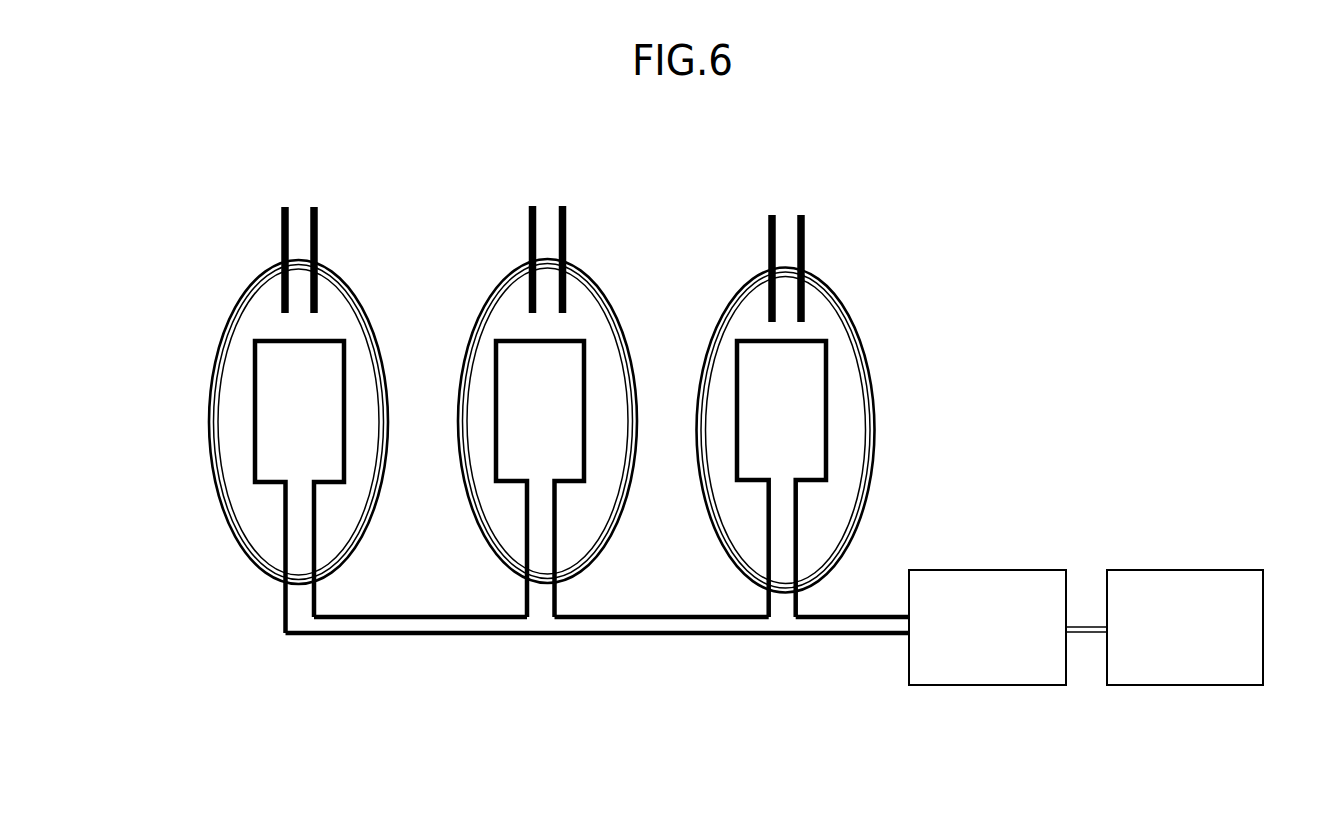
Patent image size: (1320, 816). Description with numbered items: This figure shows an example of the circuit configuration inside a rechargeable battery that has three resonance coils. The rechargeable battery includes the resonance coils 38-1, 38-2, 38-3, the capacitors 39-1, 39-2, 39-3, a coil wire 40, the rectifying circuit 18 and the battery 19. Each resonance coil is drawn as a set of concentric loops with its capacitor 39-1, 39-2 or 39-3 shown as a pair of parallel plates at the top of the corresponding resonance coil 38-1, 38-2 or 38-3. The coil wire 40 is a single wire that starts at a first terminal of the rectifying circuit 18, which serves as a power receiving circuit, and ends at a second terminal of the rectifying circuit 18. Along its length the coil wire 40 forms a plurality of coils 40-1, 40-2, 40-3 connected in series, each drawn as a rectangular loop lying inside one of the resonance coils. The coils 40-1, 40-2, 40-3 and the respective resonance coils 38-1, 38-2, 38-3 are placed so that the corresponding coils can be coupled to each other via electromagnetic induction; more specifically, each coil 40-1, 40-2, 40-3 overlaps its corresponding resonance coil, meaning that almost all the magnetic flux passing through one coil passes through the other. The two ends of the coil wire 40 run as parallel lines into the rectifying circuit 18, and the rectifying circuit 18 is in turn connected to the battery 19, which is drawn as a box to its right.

The resonance coil 38-1 is at (378, 337).
The resonance coil 38-2 is at (627, 337).
The resonance coil 38-3 is at (862, 338).
The capacitor 39-1 is at (318, 243).
The capacitor 39-2 is at (567, 243).
The capacitor 39-3 is at (805, 243).
The coil 40-1 is at (255, 458).
The coil 40-2 is at (496, 452).
The coil 40-3 is at (737, 450).
The coil wire 40 is at (544, 645).
The rectifying circuit 18 is at (990, 570).
The battery 19 is at (1188, 570).